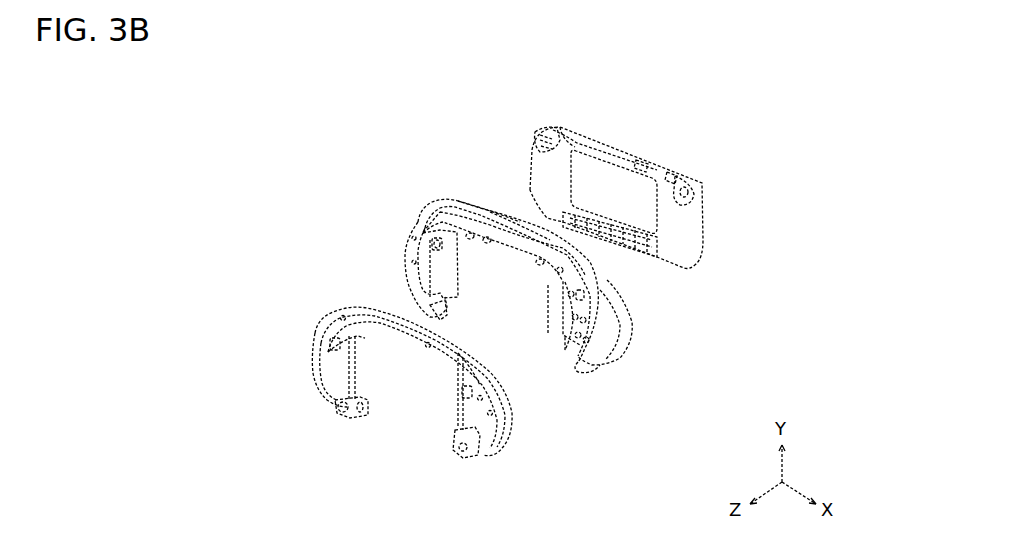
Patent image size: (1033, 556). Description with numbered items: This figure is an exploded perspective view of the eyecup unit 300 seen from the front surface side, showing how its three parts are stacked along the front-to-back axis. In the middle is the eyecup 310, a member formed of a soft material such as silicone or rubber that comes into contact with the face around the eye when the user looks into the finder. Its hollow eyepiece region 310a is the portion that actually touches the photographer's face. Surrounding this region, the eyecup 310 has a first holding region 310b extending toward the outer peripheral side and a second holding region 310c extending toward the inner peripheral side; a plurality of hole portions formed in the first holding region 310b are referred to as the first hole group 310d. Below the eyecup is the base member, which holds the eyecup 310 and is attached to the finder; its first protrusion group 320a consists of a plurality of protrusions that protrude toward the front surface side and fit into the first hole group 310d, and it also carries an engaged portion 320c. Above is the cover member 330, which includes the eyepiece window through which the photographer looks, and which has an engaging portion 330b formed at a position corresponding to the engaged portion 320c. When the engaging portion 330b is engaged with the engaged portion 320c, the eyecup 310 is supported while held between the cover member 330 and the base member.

The eyecup unit 300 is at (215, 90).
The eyecup 310 is at (433, 202).
The eyepiece region 310a is at (457, 203).
The first holding region 310b is at (495, 215).
The second holding region 310c is at (587, 347).
The first hole group 310d is at (413, 260).
The first protrusion group 320a is at (325, 348).
The engaged portion 320c is at (457, 430).
The cover member 330 is at (548, 126).
The engaging portion 330b is at (573, 132).